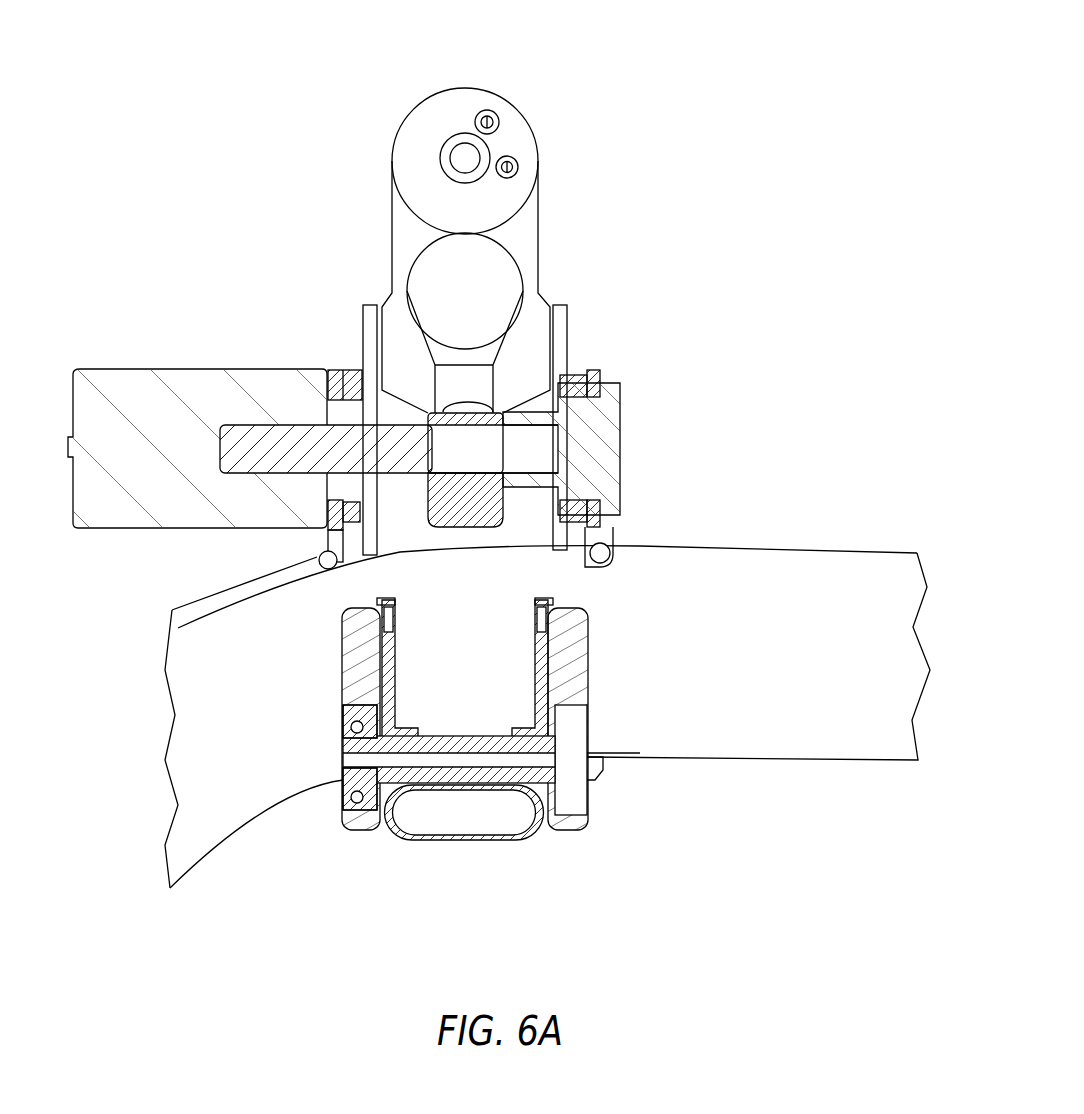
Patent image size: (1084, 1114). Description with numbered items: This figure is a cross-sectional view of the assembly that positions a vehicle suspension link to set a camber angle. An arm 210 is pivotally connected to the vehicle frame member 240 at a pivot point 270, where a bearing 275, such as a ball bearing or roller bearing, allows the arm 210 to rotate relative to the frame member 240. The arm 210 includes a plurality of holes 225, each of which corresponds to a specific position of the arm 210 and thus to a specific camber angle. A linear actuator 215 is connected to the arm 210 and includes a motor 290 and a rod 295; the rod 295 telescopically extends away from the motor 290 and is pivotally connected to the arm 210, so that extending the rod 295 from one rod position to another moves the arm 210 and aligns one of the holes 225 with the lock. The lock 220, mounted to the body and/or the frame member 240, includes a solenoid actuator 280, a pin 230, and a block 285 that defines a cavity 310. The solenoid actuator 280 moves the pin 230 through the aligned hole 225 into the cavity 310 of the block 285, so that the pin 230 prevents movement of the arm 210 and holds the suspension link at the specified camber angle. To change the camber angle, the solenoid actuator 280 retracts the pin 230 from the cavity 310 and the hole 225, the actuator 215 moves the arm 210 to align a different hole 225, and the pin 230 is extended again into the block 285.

The actuator 215 is at (478, 88).
The motor 290 is at (515, 133).
The rod 295 is at (440, 282).
The holes 225 is at (498, 417).
The cavity 310 is at (538, 446).
The block 285 is at (605, 480).
The lock 220 is at (192, 378).
The solenoid actuator 280 is at (165, 503).
The pin 230 is at (272, 458).
The arm 210 is at (473, 518).
The frame member 240 is at (353, 653).
The pivot point 270 is at (342, 758).
The bearing 275 is at (343, 778).